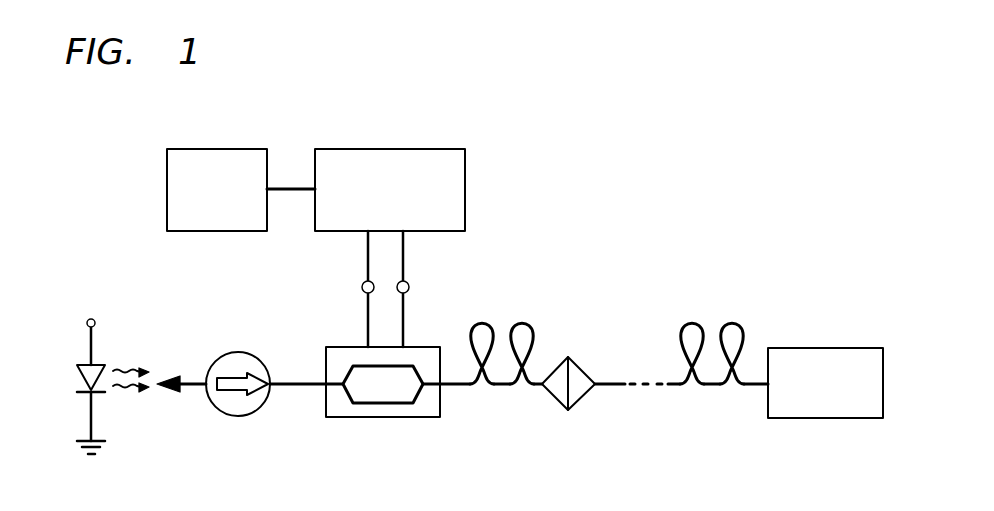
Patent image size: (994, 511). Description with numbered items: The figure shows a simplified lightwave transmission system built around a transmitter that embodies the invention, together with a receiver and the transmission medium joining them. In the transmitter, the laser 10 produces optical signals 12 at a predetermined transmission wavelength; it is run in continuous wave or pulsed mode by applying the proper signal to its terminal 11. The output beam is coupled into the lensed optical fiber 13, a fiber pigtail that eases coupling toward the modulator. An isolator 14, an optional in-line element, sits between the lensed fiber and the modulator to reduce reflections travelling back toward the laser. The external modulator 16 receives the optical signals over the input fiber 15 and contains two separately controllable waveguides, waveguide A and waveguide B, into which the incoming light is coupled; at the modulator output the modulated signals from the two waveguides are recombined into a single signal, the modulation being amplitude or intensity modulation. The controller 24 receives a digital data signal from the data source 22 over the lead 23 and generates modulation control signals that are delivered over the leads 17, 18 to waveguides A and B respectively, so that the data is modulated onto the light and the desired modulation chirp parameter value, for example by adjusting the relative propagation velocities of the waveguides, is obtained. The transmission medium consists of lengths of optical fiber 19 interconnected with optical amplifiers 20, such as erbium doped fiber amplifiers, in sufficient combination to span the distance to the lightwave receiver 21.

The laser 10 is at (77, 365).
The terminal 11 is at (88, 322).
The optical signals 12 is at (128, 365).
The lensed optical fiber 13 is at (180, 378).
The isolator 14 is at (242, 354).
The input fiber 15 is at (283, 381).
The external modulator 16 is at (342, 417).
The lead 17 is at (362, 287).
The lead 18 is at (409, 287).
The optical fiber 19 is at (452, 387).
The optical amplifier 20 is at (570, 410).
The receiver 21 is at (795, 420).
The data source 22 is at (217, 148).
The lead 23 is at (295, 187).
The controller 24 is at (380, 148).
The waveguide A is at (362, 365).
The waveguide B is at (390, 405).